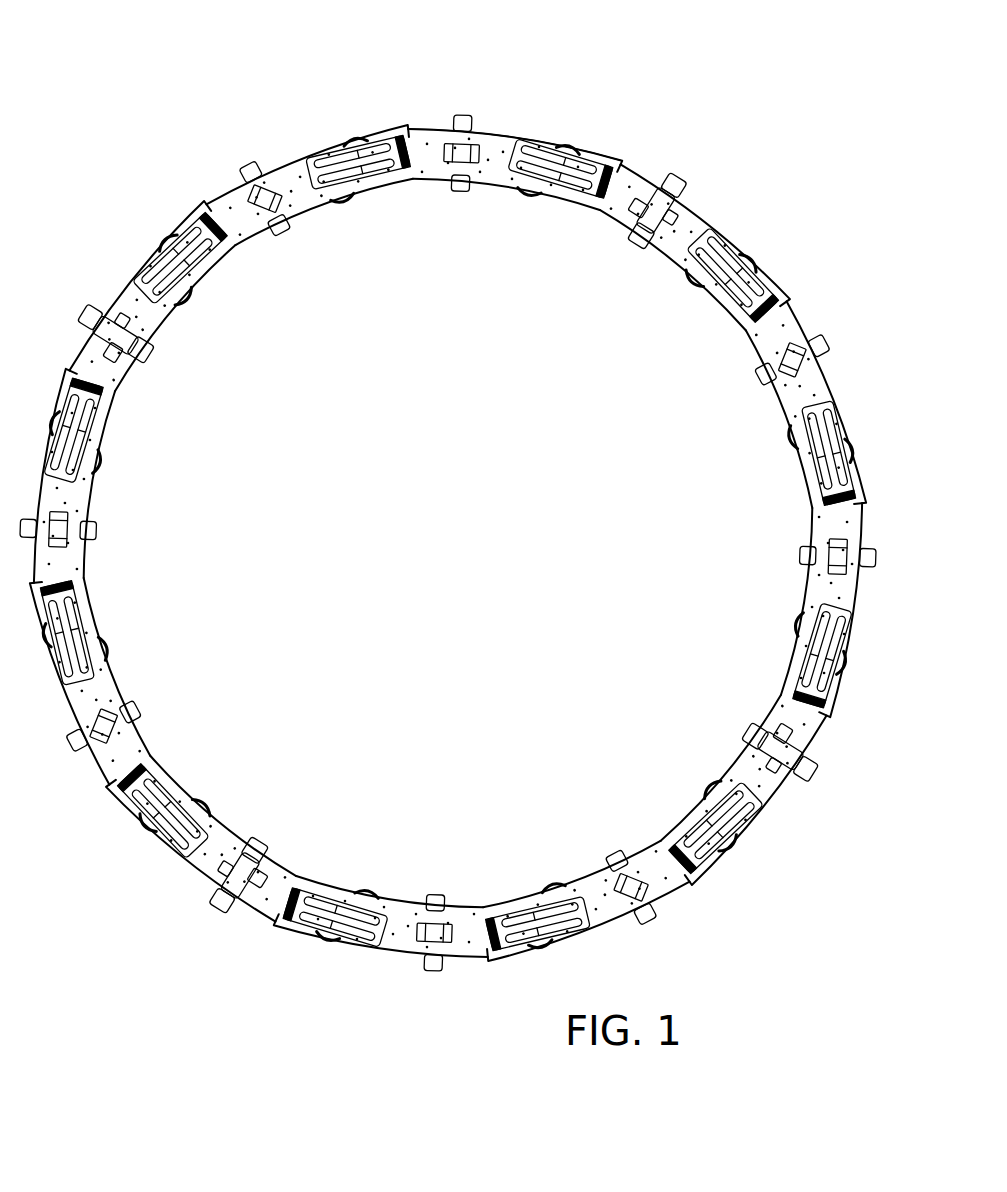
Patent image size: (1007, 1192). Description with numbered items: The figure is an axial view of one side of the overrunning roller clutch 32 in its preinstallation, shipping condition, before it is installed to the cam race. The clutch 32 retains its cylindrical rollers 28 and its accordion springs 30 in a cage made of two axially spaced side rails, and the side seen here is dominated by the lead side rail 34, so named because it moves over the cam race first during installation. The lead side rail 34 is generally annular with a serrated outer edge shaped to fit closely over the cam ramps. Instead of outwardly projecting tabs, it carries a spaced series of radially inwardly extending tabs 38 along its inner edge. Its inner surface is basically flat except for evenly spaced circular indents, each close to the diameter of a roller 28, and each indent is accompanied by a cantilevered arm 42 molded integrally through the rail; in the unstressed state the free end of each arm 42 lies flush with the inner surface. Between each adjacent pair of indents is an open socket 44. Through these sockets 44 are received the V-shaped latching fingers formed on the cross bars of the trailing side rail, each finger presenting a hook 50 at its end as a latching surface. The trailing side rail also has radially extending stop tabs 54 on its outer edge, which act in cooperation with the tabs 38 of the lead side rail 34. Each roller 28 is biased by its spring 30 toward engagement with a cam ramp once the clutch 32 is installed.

The cylindrical roller 28 is at (733, 853).
The spring 30 is at (800, 688).
The overrunning roller clutch 32 is at (253, 112).
The lead side rail 34 is at (509, 122).
The radially inwardly extending tab 38 is at (750, 733).
The cantilevered arm 42 is at (555, 910).
The open socket 44 is at (793, 743).
The hook 50 is at (777, 732).
The stop tab 54 is at (803, 770).